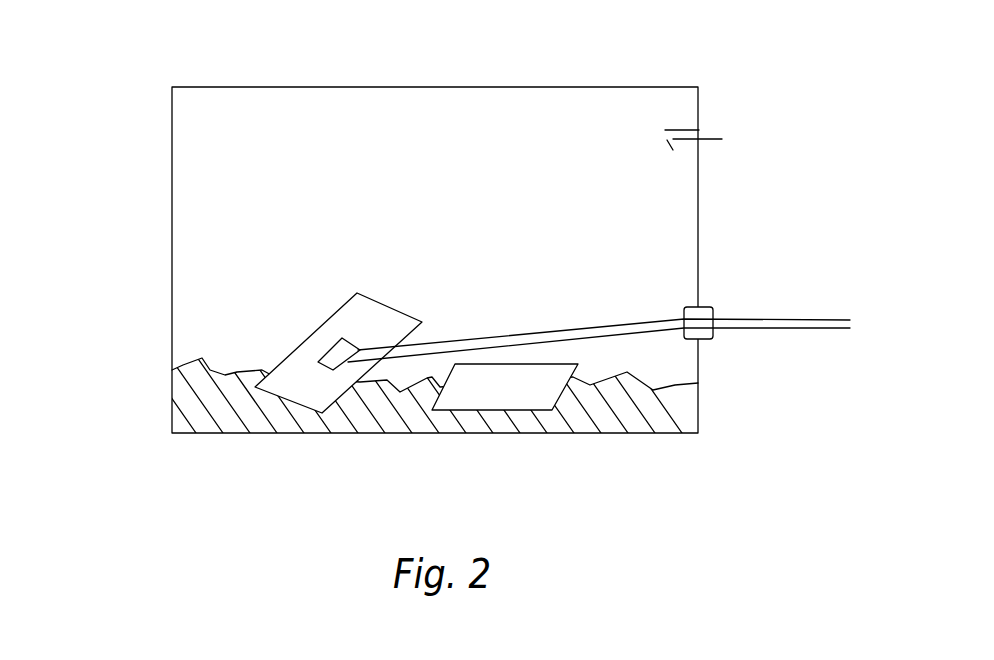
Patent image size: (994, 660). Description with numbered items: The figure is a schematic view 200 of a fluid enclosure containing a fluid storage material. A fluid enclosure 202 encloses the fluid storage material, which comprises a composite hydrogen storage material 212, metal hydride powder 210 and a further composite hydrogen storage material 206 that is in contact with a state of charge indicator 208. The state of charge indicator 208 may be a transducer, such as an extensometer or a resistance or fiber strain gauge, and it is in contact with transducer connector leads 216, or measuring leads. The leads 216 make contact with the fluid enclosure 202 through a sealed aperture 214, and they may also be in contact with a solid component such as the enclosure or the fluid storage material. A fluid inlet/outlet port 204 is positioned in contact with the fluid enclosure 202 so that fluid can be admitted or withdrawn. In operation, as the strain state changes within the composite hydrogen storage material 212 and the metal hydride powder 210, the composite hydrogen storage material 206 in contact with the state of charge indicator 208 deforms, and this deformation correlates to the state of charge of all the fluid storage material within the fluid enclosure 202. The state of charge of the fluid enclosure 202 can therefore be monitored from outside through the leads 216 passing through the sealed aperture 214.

The schematic view 200 is at (98, 25).
The fluid enclosure 202 is at (673, 87).
The fluid inlet/outlet port 204 is at (719, 127).
The composite hydrogen storage material 206 is at (332, 313).
The state of charge indicator 208 is at (343, 337).
The metal hydride powder 210 is at (246, 433).
The composite hydrogen storage material 212 is at (493, 403).
The sealed aperture 214 is at (713, 340).
The transducer connector leads 216 is at (853, 300).